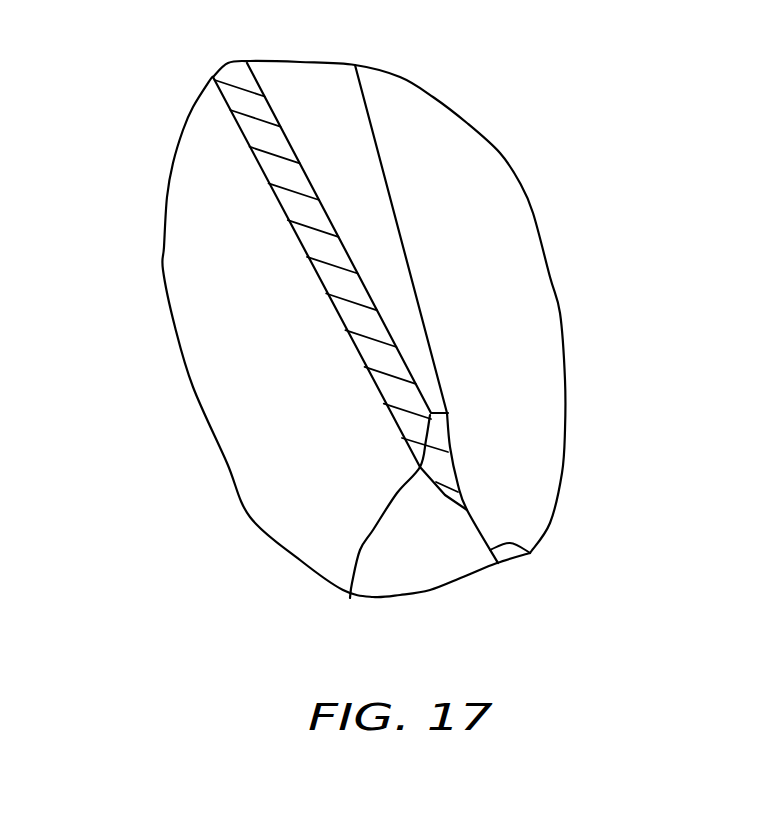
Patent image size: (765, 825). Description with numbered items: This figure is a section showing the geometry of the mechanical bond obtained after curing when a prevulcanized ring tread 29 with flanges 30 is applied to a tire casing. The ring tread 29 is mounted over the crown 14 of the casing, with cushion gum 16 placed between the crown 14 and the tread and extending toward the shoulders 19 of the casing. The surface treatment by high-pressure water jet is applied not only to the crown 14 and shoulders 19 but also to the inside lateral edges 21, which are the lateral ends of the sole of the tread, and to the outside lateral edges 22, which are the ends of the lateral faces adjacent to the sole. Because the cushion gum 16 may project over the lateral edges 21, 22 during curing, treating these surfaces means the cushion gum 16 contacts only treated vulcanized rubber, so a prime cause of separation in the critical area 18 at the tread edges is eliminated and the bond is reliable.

The crown 14 is at (262, 173).
The cushion gum 16 is at (443, 470).
The critical area 18 is at (481, 418).
The shoulders 19 is at (530, 553).
The inside lateral edges 21 is at (320, 282).
The outside lateral edges 22 is at (350, 598).
The ring tread 29 is at (330, 80).
The flanges 30 is at (388, 240).